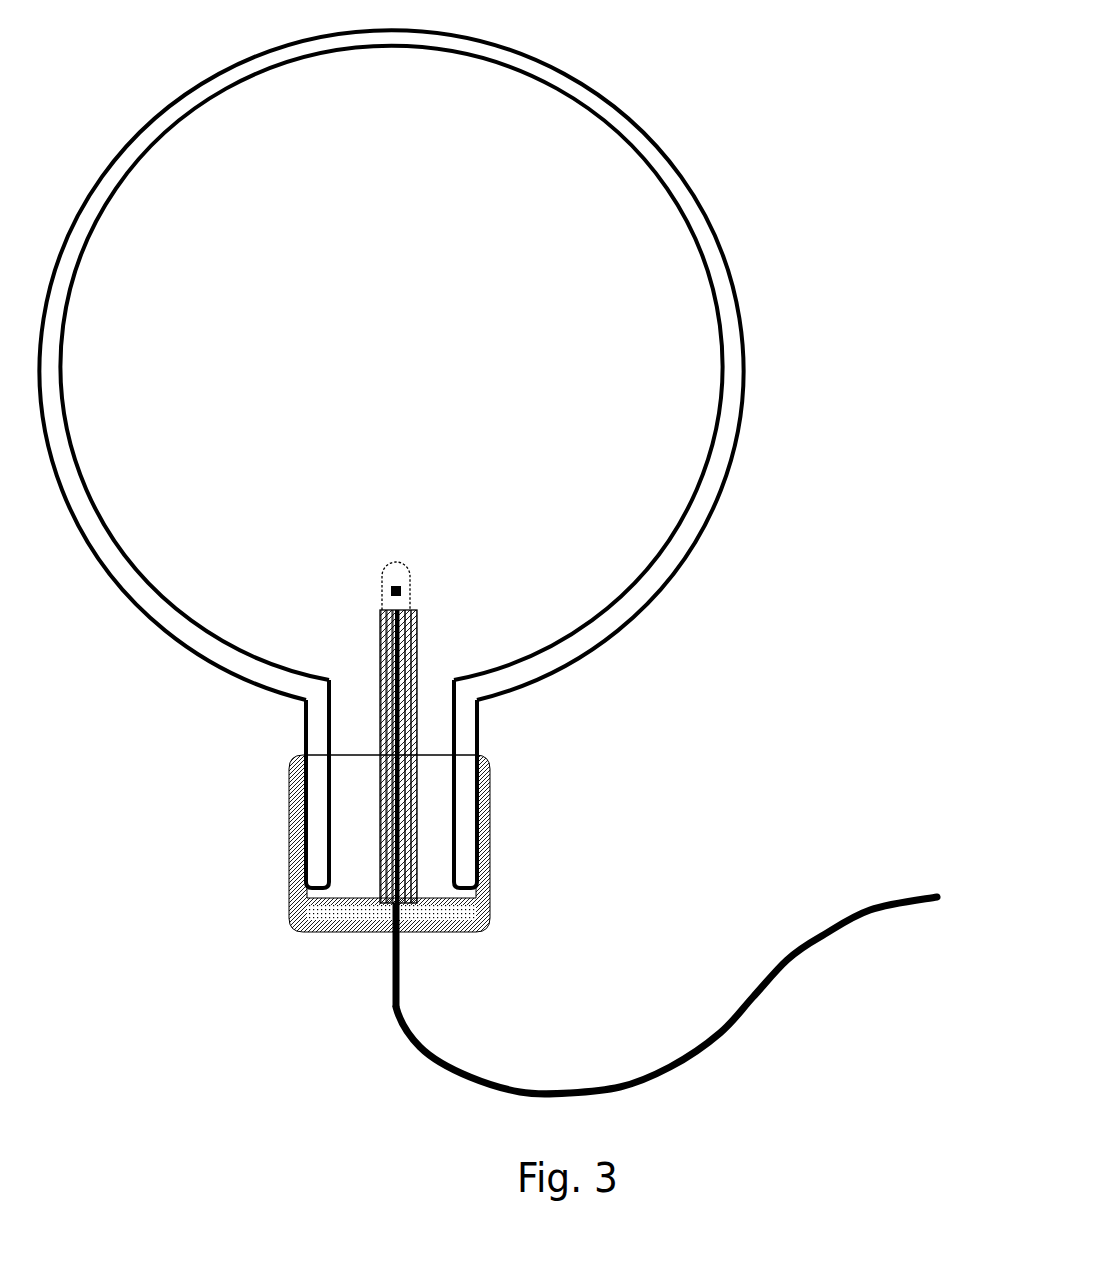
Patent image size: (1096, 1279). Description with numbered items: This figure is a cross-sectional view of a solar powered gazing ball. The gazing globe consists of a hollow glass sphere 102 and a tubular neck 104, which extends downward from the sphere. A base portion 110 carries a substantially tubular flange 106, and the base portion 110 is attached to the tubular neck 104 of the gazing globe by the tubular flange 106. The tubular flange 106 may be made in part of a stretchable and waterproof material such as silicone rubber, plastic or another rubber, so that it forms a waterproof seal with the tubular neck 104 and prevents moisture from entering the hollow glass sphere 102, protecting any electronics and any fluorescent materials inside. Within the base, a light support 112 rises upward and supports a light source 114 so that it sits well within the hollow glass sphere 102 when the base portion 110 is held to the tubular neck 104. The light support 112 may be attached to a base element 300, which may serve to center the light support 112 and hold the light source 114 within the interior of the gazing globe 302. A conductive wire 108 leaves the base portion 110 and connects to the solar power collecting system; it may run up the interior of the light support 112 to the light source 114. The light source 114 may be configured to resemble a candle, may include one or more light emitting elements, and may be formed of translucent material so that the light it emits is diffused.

The hollow glass sphere 102 is at (702, 161).
The tubular neck 104 is at (499, 728).
The tubular flange 106 is at (497, 867).
The conductive wire 108 is at (830, 967).
The base portion 110 is at (372, 950).
The light support 112 is at (362, 735).
The light source 114 is at (429, 571).
The base element 300 is at (330, 909).
The interior of the gazing globe 302 is at (340, 337).